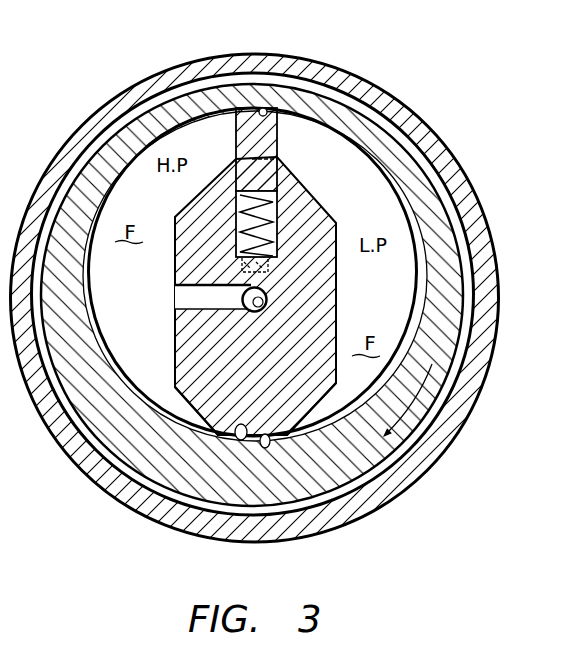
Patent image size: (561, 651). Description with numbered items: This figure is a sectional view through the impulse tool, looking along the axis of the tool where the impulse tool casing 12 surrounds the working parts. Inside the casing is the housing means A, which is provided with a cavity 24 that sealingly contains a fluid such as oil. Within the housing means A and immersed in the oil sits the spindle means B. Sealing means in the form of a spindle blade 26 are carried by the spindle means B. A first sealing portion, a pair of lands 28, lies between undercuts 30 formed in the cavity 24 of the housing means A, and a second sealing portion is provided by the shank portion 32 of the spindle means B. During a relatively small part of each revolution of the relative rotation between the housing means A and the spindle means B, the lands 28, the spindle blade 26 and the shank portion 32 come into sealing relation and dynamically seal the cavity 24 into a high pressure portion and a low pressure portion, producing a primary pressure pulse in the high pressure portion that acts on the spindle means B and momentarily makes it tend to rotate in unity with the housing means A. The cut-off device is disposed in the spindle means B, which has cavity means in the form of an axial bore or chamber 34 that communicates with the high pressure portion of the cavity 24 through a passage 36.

The impulse tool casing 12 is at (466, 412).
The cavity 24 is at (400, 223).
The spindle blade 26 is at (280, 150).
The lands 28 is at (266, 108).
The undercuts 30 is at (398, 192).
The shank portion 32 is at (267, 433).
The axial bore or chamber 34 is at (262, 300).
The passage 36 is at (183, 297).
The housing means A is at (410, 176).
The spindle means B is at (173, 240).